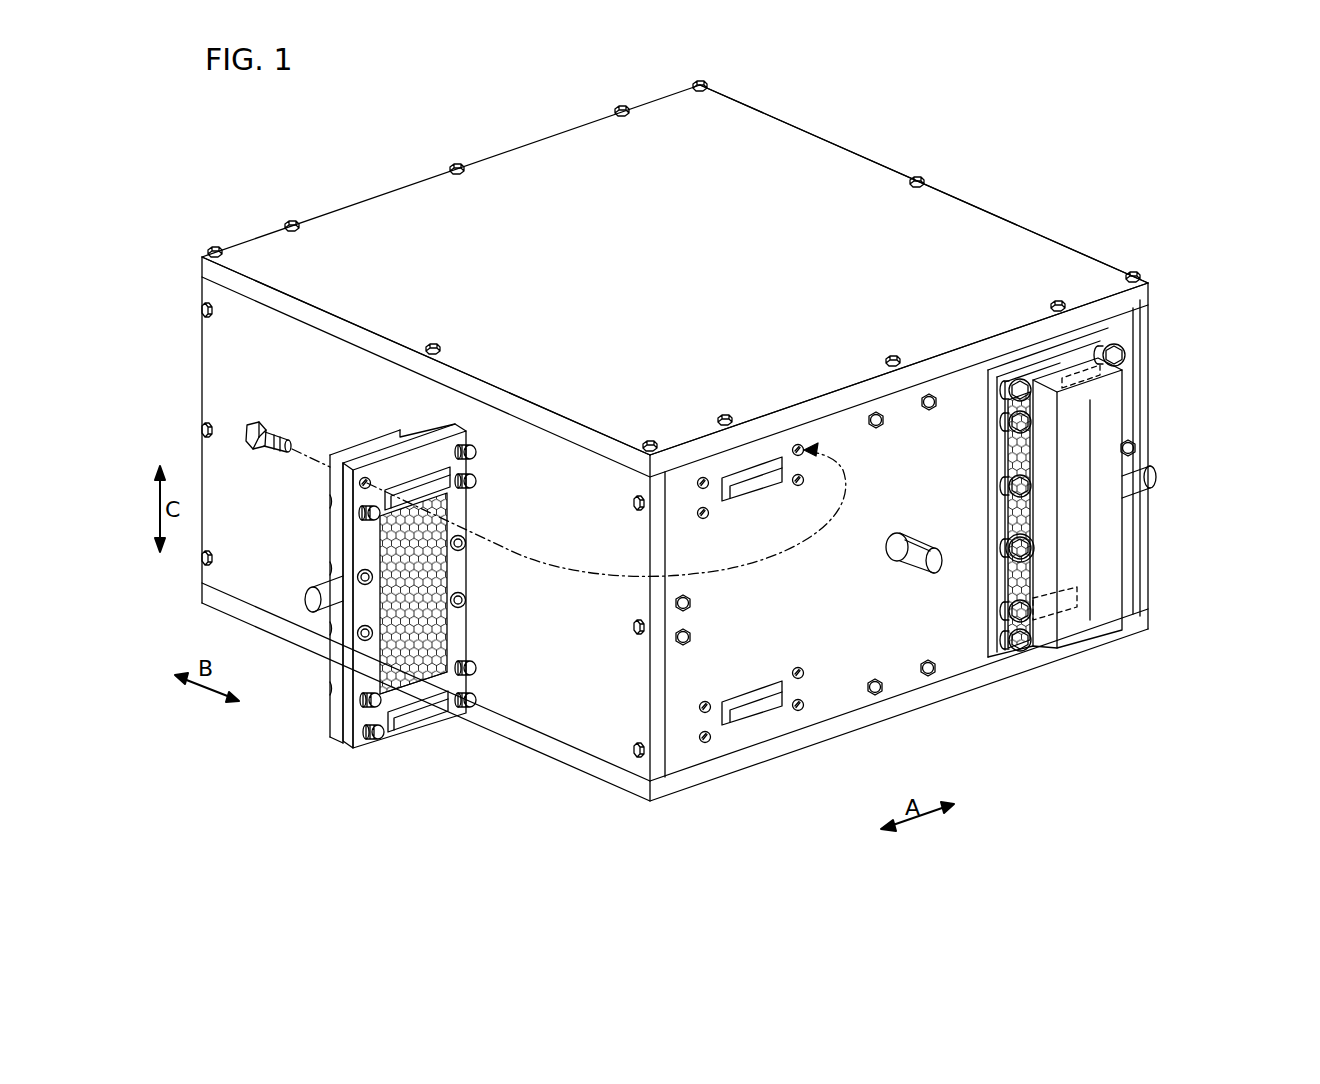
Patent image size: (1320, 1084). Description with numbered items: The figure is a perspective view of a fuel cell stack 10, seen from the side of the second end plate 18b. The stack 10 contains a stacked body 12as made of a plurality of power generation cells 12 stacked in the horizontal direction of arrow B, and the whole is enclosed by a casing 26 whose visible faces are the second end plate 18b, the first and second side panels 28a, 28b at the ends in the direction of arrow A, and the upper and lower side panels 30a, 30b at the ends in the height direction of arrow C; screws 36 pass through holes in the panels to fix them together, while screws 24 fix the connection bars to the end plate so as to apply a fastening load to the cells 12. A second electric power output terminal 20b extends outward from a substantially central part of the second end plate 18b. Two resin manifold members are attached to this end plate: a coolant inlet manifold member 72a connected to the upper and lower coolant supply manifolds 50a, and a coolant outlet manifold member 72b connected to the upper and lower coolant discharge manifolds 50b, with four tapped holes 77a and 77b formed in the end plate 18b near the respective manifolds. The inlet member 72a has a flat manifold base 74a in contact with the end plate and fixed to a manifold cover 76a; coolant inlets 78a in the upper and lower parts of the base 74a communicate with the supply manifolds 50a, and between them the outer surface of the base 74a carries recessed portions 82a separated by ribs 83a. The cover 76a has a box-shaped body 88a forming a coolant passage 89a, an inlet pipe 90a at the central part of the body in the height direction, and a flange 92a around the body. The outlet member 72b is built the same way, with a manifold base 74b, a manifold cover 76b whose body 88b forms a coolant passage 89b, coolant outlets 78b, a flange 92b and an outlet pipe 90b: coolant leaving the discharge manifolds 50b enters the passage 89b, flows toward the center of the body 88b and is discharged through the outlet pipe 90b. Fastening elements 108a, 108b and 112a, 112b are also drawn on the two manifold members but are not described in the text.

The fuel cell stack 10 is at (398, 130).
The power generation cell 12 is at (951, 218).
The stacked body 12as is at (988, 218).
The second end plate 18b is at (906, 694).
The second electric power output terminal 20b is at (917, 572).
The screw 24 is at (691, 606).
The casing 26 is at (863, 150).
The first side panel 28a is at (1140, 372).
The second side panel 28b is at (552, 718).
The upper side panel 30a is at (808, 137).
The lower side panel 30b is at (578, 782).
The screw 36 is at (292, 220).
The coolant supply manifold 50a is at (762, 484).
The coolant discharge manifold 50b is at (1058, 386).
The coolant inlet manifold member 72a is at (340, 446).
The coolant outlet manifold member 72b is at (1120, 652).
The manifold base 74a is at (362, 760).
The manifold base 74b is at (982, 459).
The manifold cover 76a is at (330, 520).
The manifold cover 76b is at (1126, 339).
The tapped hole 77a is at (802, 440).
The tapped hole 77b is at (990, 382).
The coolant inlet 78a is at (410, 482).
The coolant outlet 78b is at (1070, 607).
The recessed portion 82a is at (436, 585).
The rib 83a is at (442, 665).
The box-shaped body 88a is at (365, 442).
The body 88b is at (1105, 583).
The coolant passage 89a is at (357, 485).
The coolant passage 89b is at (1098, 528).
The inlet pipe 90a is at (312, 607).
The outlet pipe 90b is at (1150, 482).
The flange 92a is at (338, 678).
The flange 92b is at (1008, 508).
The bolt 108a is at (252, 423).
The bolt 108b is at (1120, 356).
The collar 112a is at (357, 577).
The collar 112b is at (1006, 548).